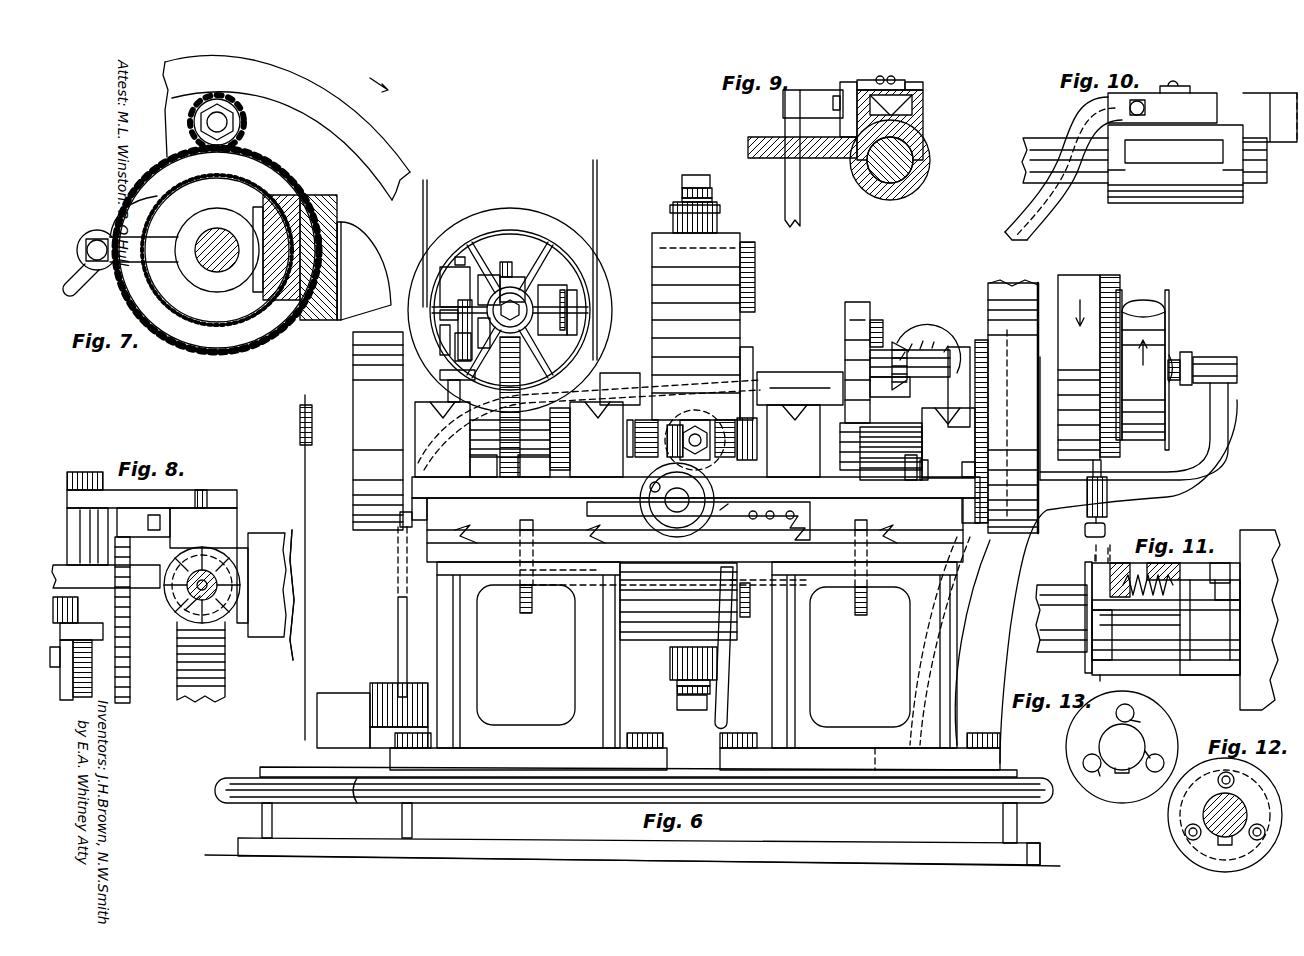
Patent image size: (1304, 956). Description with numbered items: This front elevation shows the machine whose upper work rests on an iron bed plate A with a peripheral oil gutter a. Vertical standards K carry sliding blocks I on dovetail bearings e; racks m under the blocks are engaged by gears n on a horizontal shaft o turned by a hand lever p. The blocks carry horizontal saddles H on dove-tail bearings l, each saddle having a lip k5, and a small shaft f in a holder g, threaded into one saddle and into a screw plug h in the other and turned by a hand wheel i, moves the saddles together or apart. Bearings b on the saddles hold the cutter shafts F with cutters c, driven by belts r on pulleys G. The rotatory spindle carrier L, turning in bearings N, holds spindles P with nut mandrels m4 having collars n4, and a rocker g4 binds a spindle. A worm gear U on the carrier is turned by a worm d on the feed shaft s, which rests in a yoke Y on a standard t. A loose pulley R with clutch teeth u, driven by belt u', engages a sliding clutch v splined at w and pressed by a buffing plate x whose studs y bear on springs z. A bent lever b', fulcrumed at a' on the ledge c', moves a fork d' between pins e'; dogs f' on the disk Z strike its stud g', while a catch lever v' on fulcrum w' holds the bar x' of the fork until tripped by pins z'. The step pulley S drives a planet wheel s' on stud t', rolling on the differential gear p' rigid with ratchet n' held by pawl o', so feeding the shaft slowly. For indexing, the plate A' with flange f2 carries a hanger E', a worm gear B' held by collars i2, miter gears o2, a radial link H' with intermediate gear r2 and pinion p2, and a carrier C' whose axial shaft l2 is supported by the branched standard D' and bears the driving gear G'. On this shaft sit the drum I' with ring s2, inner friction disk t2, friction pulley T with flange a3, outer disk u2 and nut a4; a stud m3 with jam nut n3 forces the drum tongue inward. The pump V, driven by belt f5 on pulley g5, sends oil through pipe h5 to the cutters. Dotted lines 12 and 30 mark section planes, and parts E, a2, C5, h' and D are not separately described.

In FIG. 6, the bed plate A is at (632, 816).
In FIG. 6, the peripheral gutter a is at (634, 790).
In FIG. 6, the standards K is at (695, 666).
In FIG. 6, the gears n is at (693, 656).
In FIG. 6, the sliding blocks I is at (695, 530).
In FIG. 6, the saddles H is at (696, 487).
In FIG. 6, the dovetail bearings e is at (683, 545).
In FIG. 6, the racks m is at (533, 524).
In FIG. 6, the dove-tail bearings l is at (696, 500).
In FIG. 6, the holder g is at (610, 425).
In FIG. 8, the small shaft f is at (201, 597).
In FIG. 6, the small shaft f is at (723, 514).
In FIG. 6, the screw plug h is at (719, 338).
In FIG. 6, the hand wheel i is at (652, 520).
In FIG. 6, the cutters c is at (690, 477).
In FIG. 6, the horizontal shaft o is at (678, 601).
In FIG. 6, the rocker g4 is at (755, 262).
In FIG. 6, the spindles P is at (673, 218).
In FIG. 6, the hand lever p is at (733, 648).
In FIG. 6, the nut h' is at (692, 711).
In FIG. 6, the collar n4 is at (667, 697).
In FIG. 6, the mandrels m4 is at (712, 196).
In FIG. 6, the collar C5 is at (720, 208).
In FIG. 6, the spindle carrier L is at (696, 326).
In FIG. 6, the circular flange f2 is at (748, 358).
In FIG. 6, the bearings N is at (790, 380).
In FIG. 6, the circular plate A' is at (857, 353).
In FIG. 6, the hanger E' is at (890, 346).
In FIG. 6, the shaft E is at (915, 344).
In FIG. 6, the miter gears o2 is at (903, 354).
In FIG. 6, the radial link H' is at (959, 377).
In FIG. 6, the intermediate gear r2 is at (988, 400).
In FIG. 6, the spur pinion p2 is at (1001, 423).
In FIG. 6, the bearings b is at (695, 440).
In FIG. 6, the cutter shafts F is at (927, 446).
In FIG. 8, the worm gear U is at (215, 680).
In FIG. 6, the worm gear U is at (510, 448).
In FIG. 6, the crank a2 is at (695, 420).
In FIG. 10, the carrier C' is at (1174, 151).
In FIG. 6, the carrier C' is at (891, 462).
In FIG. 6, the worm gear B' is at (911, 476).
In FIG. 6, the jam nuts i2 is at (932, 465).
In FIG. 6, the driving gear G' is at (962, 472).
In FIG. 7, the step pulley S is at (286, 127).
In FIG. 6, the step pulley S is at (543, 220).
In FIG. 6, the belt u' is at (519, 238).
In FIG. 11, the belt pulley R is at (1260, 620).
In FIG. 6, the belt pulley R is at (495, 232).
In FIG. 7, the feed shaft s is at (221, 250).
In FIG. 9, the feed shaft s is at (890, 169).
In FIG. 10, the feed shaft s is at (1144, 173).
In FIG. 11, the feed shaft s is at (1061, 629).
In FIG. 12, the feed shaft s is at (1217, 818).
In FIG. 6, the feed shaft s is at (510, 310).
In FIG. 8, the fulcrum a' is at (85, 469).
In FIG. 6, the fulcrum a' is at (455, 267).
In FIG. 8, the bent lever b' is at (87, 536).
In FIG. 6, the bent lever b' is at (481, 301).
In FIG. 8, the vertical pins e' is at (152, 486).
In FIG. 6, the vertical pins e' is at (514, 257).
In FIG. 7, the yoke Y is at (258, 215).
In FIG. 8, the yoke Y is at (267, 585).
In FIG. 9, the yoke Y is at (923, 113).
In FIG. 10, the yoke Y is at (1222, 203).
In FIG. 6, the yoke Y is at (548, 285).
In FIG. 8, the catch lever v' is at (133, 620).
In FIG. 9, the catch lever v' is at (802, 158).
In FIG. 10, the catch lever v' is at (1063, 168).
In FIG. 6, the catch lever v' is at (486, 289).
In FIG. 8, the fork d' is at (209, 565).
In FIG. 9, the fork d' is at (919, 74).
In FIG. 10, the fork d' is at (1270, 104).
In FIG. 6, the fork d' is at (512, 288).
In FIG. 6, the plate D is at (575, 312).
In FIG. 7, the standard t is at (366, 271).
In FIG. 8, the standard t is at (282, 599).
In FIG. 6, the standard t is at (530, 407).
In FIG. 8, the peripheral dogs f' is at (87, 668).
In FIG. 6, the peripheral dogs f' is at (483, 333).
In FIG. 6, the projecting pin z' is at (474, 355).
In FIG. 8, the disk Z is at (61, 670).
In FIG. 6, the disk Z is at (448, 392).
In FIG. 6, the belt pulleys G is at (677, 511).
In FIG. 6, the pulley g5 is at (305, 408).
In FIG. 6, the belts r is at (695, 406).
In FIG. 6, the horizontal lip k5 is at (691, 554).
In FIG. 6, the pipe h5 is at (398, 614).
In FIG. 6, the belt f5 is at (305, 596).
In FIG. 6, the rotary pump V is at (390, 683).
In FIG. 6, the hollow drum I' is at (1079, 367).
In FIG. 6, the removable ring s2 is at (1110, 285).
In FIG. 6, the inner friction disk t2 is at (1122, 295).
In FIG. 6, the friction belt pulley T is at (1143, 370).
In FIG. 6, the outer flange a3 is at (1168, 292).
In FIG. 6, the nut a4 is at (1185, 352).
In FIG. 6, the axial shaft l2 is at (1200, 357).
In FIG. 6, the outer friction disk u2 is at (1175, 382).
In FIG. 6, the branched standard D' is at (1082, 573).
In FIG. 6, the jam nut n3 is at (1107, 512).
In FIG. 6, the stud m3 is at (1085, 530).
In FIG. 11, the line 30 is at (1086, 550).
In FIG. 6, the line 30 is at (1092, 476).
In FIG. 11, the dotted section line 12 is at (1110, 616).
In FIG. 7, the planet wheel s' is at (210, 122).
In FIG. 7, the rigid stud t' is at (234, 118).
In FIG. 7, the gear p' is at (217, 250).
In FIG. 7, the ratchet n' is at (217, 250).
In FIG. 7, the detent pawl o' is at (120, 246).
In FIG. 8, the fulcrum w' is at (143, 522).
In FIG. 9, the fulcrum w' is at (820, 109).
In FIG. 10, the fulcrum w' is at (1162, 108).
In FIG. 8, the horizontal ledge c' is at (106, 576).
In FIG. 9, the horizontal ledge c' is at (802, 157).
In FIG. 8, the clutch v is at (193, 585).
In FIG. 11, the clutch v is at (1166, 619).
In FIG. 12, the clutch v is at (1227, 815).
In FIG. 8, the spline w is at (202, 563).
In FIG. 11, the spline w is at (1102, 639).
In FIG. 8, the worm d is at (175, 615).
In FIG. 8, the stud g' is at (81, 615).
In FIG. 6, the stud g' is at (434, 340).
In FIG. 9, the short bar x' is at (880, 73).
In FIG. 10, the short bar x' is at (1170, 78).
In FIG. 11, the buffing plate x is at (1076, 617).
In FIG. 13, the buffing plate x is at (1122, 747).
In FIG. 11, the studs y is at (1101, 556).
In FIG. 13, the studs y is at (1140, 722).
In FIG. 11, the springs z is at (1150, 599).
In FIG. 12, the springs z is at (1210, 807).
In FIG. 11, the clutch teeth u is at (1220, 562).